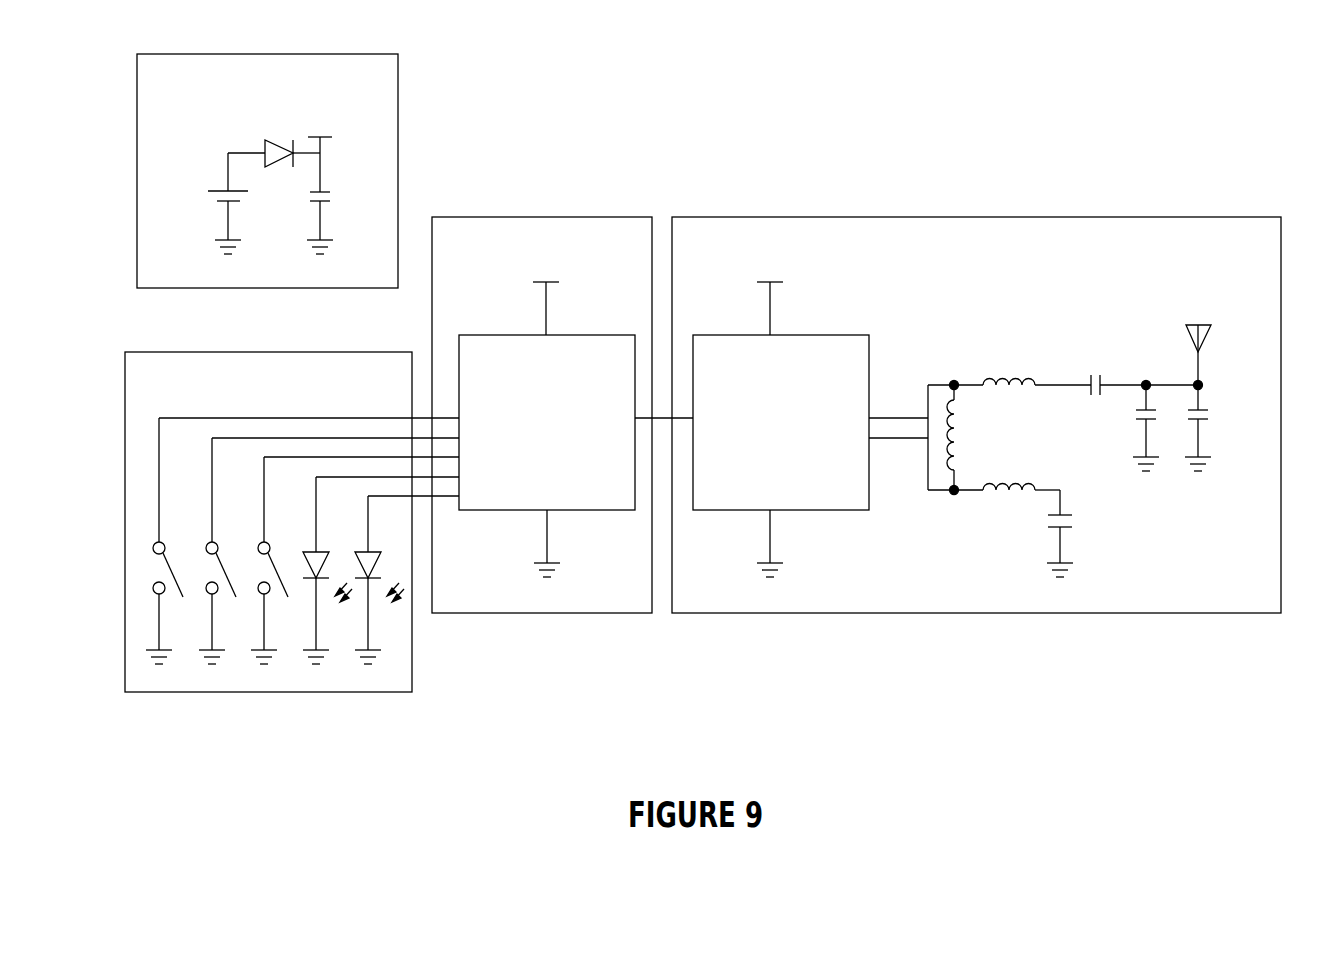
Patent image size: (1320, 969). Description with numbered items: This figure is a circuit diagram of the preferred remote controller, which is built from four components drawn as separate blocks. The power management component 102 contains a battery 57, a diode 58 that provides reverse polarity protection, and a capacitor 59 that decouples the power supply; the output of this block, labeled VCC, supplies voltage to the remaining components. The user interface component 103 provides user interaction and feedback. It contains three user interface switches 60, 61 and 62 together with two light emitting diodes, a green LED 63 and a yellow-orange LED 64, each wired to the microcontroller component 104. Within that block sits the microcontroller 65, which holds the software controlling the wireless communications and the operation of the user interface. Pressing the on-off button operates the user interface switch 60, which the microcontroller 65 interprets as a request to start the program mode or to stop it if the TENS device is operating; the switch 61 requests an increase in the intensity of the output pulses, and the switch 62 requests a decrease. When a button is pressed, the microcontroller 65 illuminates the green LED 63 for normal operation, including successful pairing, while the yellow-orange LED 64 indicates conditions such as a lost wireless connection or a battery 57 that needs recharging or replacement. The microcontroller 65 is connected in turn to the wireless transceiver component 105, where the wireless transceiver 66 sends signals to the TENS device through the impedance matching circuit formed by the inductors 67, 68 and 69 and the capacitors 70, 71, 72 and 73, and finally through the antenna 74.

The battery 57 is at (216, 203).
The diode 58 is at (278, 141).
The capacitor 59 is at (332, 220).
The user interface switch 60 is at (157, 541).
The user interface switch 61 is at (210, 551).
The user interface switch 62 is at (262, 560).
The green LED 63 is at (317, 570).
The yellow-orange LED 64 is at (370, 580).
The microcontroller 65 is at (547, 411).
The wireless transceiver 66 is at (781, 411).
The impedance matching circuit 67 is at (965, 437).
The impedance matching circuit 68 is at (1037, 372).
The impedance matching circuit 69 is at (1021, 499).
The impedance matching circuit 70 is at (1074, 533).
The impedance matching circuit 71 is at (1144, 378).
The impedance matching circuit 72 is at (1137, 428).
The impedance matching circuit 73 is at (1190, 428).
The antenna 74 is at (1222, 355).
The power management component 102 is at (300, 171).
The user interface component 103 is at (292, 551).
The microcontroller component 104 is at (562, 443).
The wireless transceiver component 105 is at (976, 443).